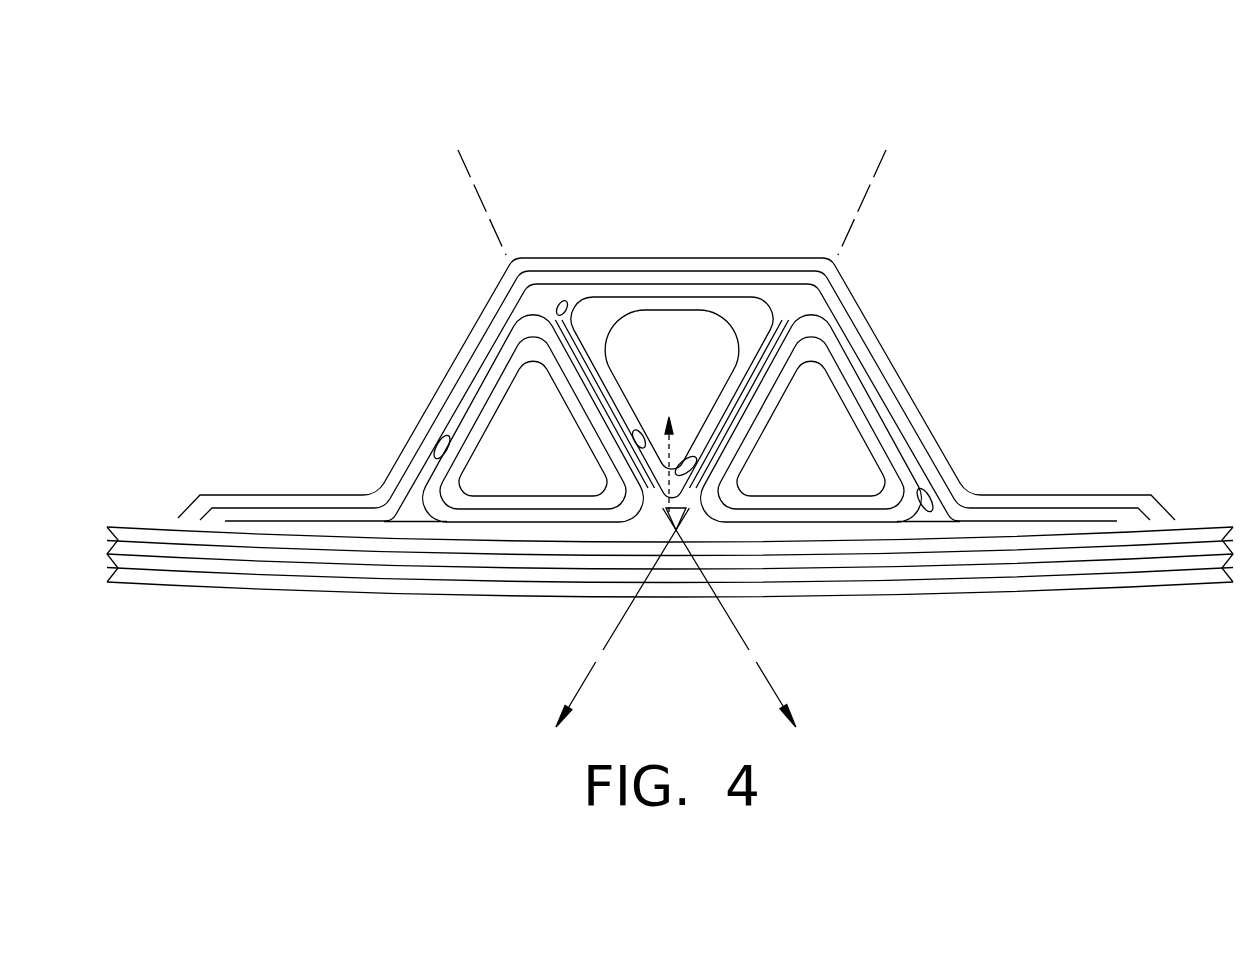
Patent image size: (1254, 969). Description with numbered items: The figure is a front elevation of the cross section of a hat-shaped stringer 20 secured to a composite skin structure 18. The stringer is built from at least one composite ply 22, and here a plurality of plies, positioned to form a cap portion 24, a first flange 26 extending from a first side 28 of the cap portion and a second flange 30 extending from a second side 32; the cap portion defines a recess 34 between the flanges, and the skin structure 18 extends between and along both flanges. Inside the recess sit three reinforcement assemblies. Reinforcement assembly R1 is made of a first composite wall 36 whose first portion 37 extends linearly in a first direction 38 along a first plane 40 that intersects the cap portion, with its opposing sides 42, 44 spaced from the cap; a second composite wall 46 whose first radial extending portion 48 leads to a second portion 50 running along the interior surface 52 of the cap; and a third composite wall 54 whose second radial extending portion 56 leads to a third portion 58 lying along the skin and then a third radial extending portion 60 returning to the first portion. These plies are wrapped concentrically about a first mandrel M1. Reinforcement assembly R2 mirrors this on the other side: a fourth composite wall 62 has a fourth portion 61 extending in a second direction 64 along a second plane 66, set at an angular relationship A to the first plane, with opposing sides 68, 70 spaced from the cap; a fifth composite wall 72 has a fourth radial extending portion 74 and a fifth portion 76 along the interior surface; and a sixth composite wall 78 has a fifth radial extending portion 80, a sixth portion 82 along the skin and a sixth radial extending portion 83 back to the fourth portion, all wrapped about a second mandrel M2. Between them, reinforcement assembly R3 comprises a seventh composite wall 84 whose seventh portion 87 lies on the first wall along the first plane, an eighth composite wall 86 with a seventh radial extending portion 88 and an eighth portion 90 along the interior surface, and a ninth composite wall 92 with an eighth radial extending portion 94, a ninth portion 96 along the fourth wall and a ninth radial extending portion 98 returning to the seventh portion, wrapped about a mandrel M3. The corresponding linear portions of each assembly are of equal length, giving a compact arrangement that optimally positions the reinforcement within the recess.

The composite skin structure 18 is at (1148, 592).
The hat-shaped stringer 20 is at (722, 147).
The composite ply 22 is at (705, 277).
The cap portion 24 is at (540, 247).
The first flange 26 is at (1112, 500).
The first side 28 is at (975, 471).
The second flange 30 is at (246, 503).
The second side 32 is at (430, 385).
The recess 34 is at (663, 500).
The first composite wall 36 is at (863, 385).
The first portion 37 is at (918, 444).
The first direction 38 is at (583, 682).
The first plane 40 is at (880, 168).
The opposing side 42 is at (775, 422).
The opposing side 44 is at (757, 297).
The second composite wall 46 is at (869, 380).
The first radial extending portion 48 is at (812, 330).
The second portion 50 is at (925, 447).
The interior surface 52 is at (442, 440).
The third composite wall 54 is at (825, 517).
The second radial extending portion 56 is at (910, 513).
The third portion 58 is at (798, 522).
The third radial extending portion 60 is at (700, 502).
The fourth portion 61 is at (450, 392).
The fourth composite wall 62 is at (535, 328).
The second direction 64 is at (768, 682).
The second plane 66 is at (488, 180).
The opposing side 68 is at (646, 434).
The opposing side 70 is at (593, 419).
The fifth composite wall 72 is at (512, 356).
The fourth radial extending portion 74 is at (563, 297).
The fifth portion 76 is at (501, 376).
The sixth composite wall 78 is at (478, 520).
The fifth radial extending portion 80 is at (438, 510).
The sixth portion 82 is at (518, 528).
The sixth radial extending portion 83 is at (620, 512).
The seventh composite wall 84 is at (721, 428).
The eighth composite wall 86 is at (730, 297).
The seventh portion 87 is at (690, 297).
The seventh radial extending portion 88 is at (772, 305).
The eighth portion 90 is at (681, 297).
The ninth composite wall 92 is at (667, 297).
The eighth radial extending portion 94 is at (578, 297).
The ninth portion 96 is at (634, 440).
The ninth radial extending portion 98 is at (748, 478).
The angular relationship A is at (700, 470).
The reinforcement assembly R1 is at (851, 462).
The reinforcement assembly R2 is at (511, 482).
The reinforcement assembly R3 is at (681, 345).
The first mandrel M1 is at (855, 500).
The second mandrel M2 is at (465, 418).
The mandrel M3 is at (732, 350).